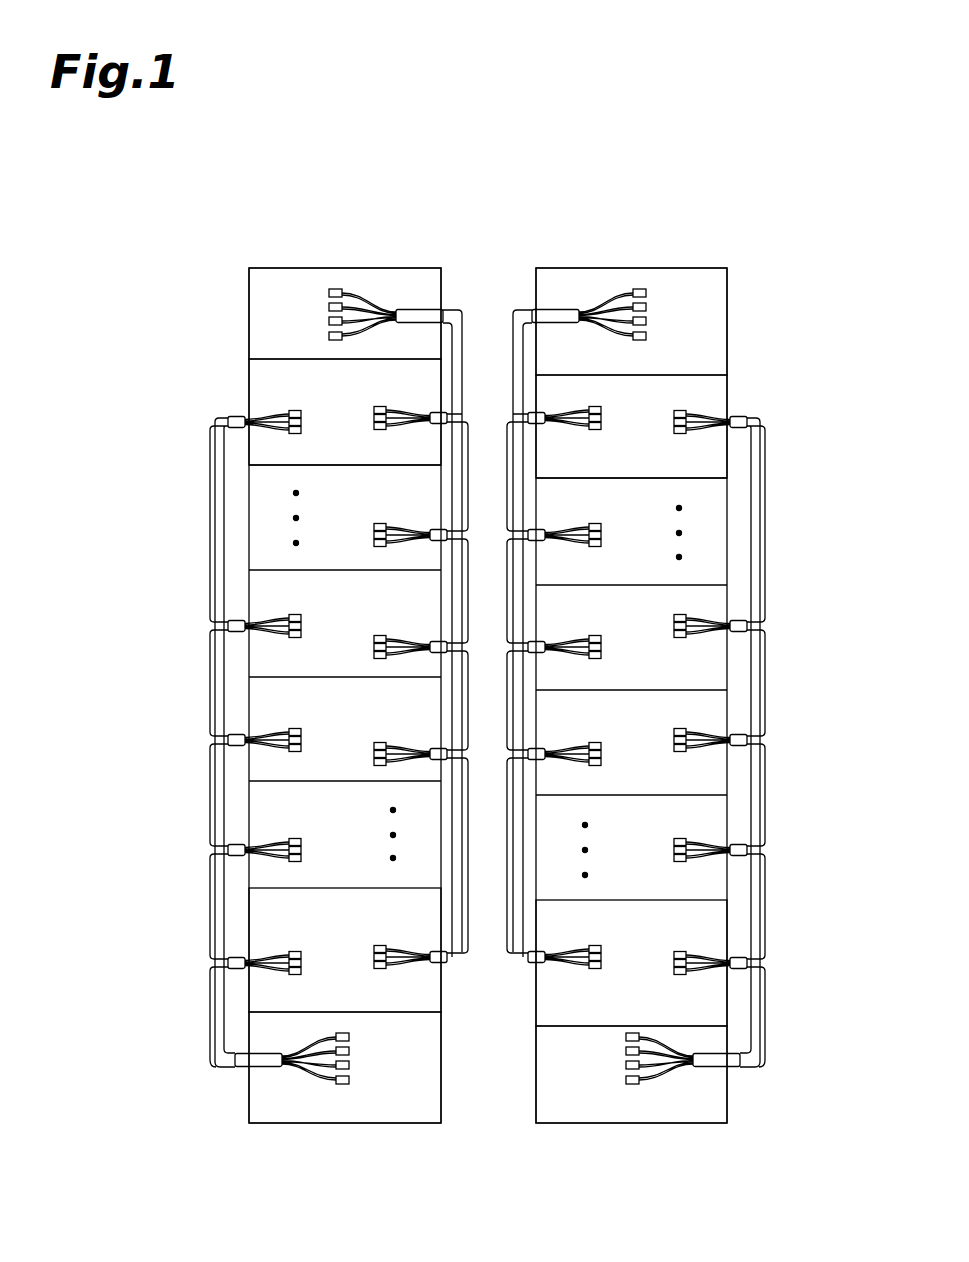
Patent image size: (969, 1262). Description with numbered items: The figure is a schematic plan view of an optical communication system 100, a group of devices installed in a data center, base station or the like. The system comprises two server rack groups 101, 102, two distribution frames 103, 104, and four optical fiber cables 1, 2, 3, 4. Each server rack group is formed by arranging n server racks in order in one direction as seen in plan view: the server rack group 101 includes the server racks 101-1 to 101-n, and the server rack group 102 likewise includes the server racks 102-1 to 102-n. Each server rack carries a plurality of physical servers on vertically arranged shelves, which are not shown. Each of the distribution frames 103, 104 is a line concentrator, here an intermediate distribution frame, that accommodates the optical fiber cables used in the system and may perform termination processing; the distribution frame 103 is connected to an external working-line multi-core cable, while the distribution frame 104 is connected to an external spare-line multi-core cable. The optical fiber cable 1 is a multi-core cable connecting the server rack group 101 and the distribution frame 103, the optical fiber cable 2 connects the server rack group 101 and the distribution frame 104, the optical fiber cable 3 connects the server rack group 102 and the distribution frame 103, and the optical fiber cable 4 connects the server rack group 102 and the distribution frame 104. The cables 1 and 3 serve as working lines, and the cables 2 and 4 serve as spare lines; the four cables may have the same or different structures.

The optical communication system 100 is at (744, 202).
The server rack group 101 is at (280, 695).
The server rack 101-1 is at (262, 370).
The server rack 101-n is at (262, 946).
The server rack group 102 is at (690, 695).
The server rack 102-1 is at (724, 380).
The server rack 102-n is at (724, 946).
The distribution frame 103 is at (540, 260).
The distribution frame 104 is at (536, 1131).
The optical fiber cable 1 is at (463, 970).
The optical fiber cable 2 is at (210, 585).
The optical fiber cable 3 is at (518, 972).
The optical fiber cable 4 is at (769, 601).